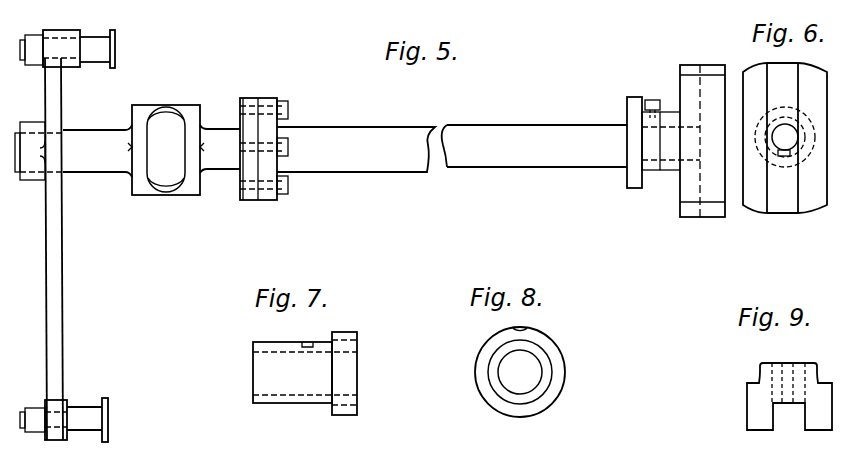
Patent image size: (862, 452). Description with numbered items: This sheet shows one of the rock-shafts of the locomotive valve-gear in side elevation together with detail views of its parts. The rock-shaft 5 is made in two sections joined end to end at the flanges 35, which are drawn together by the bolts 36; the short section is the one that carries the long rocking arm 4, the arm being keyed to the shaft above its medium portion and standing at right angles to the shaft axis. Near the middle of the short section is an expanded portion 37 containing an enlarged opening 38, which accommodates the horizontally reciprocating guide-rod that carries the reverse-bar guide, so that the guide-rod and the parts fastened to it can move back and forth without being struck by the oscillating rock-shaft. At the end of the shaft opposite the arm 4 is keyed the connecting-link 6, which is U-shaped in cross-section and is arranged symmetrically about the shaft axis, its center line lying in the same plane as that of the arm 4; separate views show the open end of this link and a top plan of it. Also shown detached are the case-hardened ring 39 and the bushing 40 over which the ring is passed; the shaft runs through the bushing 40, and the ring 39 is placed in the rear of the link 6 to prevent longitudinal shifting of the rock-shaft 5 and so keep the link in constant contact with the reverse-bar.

In FIG. 5, the rocking arm 4 is at (47, 274).
In FIG. 5, the rock-shaft 5 is at (341, 130).
In FIG. 6, the rock-shaft 5 is at (785, 137).
In FIG. 5, the connecting-link 6 is at (700, 66).
In FIG. 6, the connecting-link 6 is at (785, 129).
In FIG. 9, the connecting-link 6 is at (750, 408).
In FIG. 5, the flanges 35 is at (268, 95).
In FIG. 5, the bolts 36 is at (285, 104).
In FIG. 5, the expanded portion 37 is at (182, 100).
In FIG. 5, the enlarged opening 38 is at (166, 149).
In FIG. 7, the case-hardened ring 39 is at (349, 330).
In FIG. 8, the case-hardened ring 39 is at (544, 336).
In FIG. 7, the bushing 40 is at (291, 343).
In FIG. 8, the bushing 40 is at (500, 388).